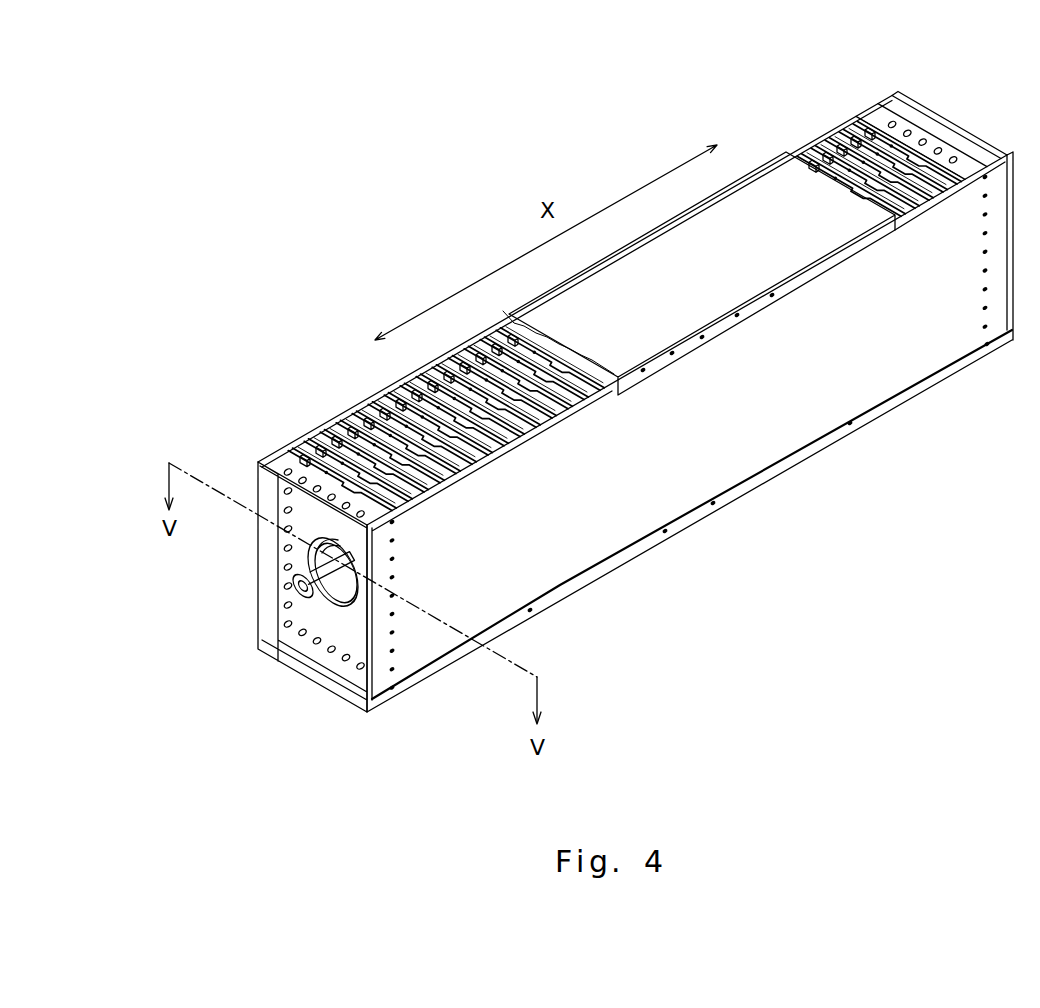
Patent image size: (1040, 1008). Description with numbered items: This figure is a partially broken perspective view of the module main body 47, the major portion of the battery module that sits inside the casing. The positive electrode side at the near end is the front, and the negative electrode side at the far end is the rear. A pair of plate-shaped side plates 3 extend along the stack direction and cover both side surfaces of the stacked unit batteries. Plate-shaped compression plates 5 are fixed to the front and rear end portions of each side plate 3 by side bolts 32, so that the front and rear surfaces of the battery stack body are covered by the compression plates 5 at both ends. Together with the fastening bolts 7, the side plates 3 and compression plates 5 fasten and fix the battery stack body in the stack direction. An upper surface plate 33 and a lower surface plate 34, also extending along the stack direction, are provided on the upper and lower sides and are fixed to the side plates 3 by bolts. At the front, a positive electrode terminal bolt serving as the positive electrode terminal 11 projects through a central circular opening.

The side plate 3 is at (780, 433).
The compression plate 5 is at (293, 457).
The fastening bolt 7 is at (380, 400).
The positive electrode terminal 11 is at (310, 610).
The side bolt 32 is at (400, 673).
The upper surface plate 33 is at (777, 160).
The lower surface plate 34 is at (627, 555).
The module main body 47 is at (337, 305).